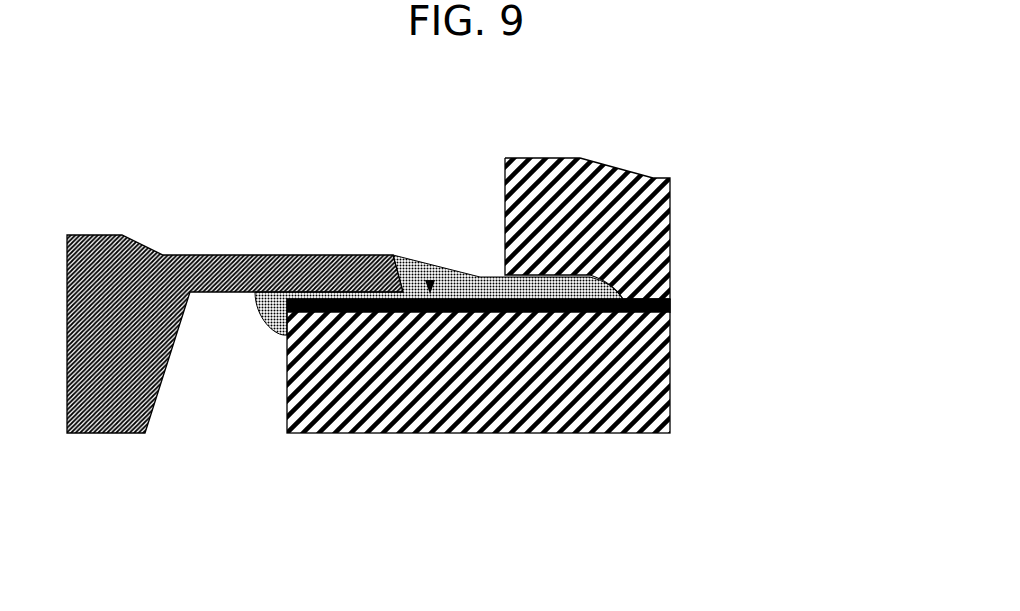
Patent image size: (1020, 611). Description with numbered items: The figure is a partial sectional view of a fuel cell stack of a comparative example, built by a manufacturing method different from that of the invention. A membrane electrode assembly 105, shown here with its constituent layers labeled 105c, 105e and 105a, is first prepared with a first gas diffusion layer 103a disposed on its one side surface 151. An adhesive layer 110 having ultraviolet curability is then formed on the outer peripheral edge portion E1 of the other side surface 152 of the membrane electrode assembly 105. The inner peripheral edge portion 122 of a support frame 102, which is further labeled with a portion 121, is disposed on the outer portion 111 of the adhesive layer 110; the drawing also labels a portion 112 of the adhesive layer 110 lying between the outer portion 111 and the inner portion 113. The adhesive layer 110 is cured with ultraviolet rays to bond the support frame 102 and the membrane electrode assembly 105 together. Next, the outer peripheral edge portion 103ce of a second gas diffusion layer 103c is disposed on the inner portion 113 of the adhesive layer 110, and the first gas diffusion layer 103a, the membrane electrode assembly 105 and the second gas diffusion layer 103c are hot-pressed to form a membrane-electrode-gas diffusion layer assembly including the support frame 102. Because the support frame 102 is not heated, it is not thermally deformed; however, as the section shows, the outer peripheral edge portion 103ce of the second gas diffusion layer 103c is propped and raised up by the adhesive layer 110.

The support frame 102 is at (235, 266).
The base portion 121 is at (153, 250).
The inner peripheral edge portion 122 is at (240, 254).
The outer peripheral edge portion 103ce is at (530, 172).
The first gas diffusion layer 103a is at (627, 337).
The second gas diffusion layer 103c is at (655, 213).
The membrane electrode assembly 105 is at (774, 218).
The end face upper part 105c is at (673, 301).
The end face edge 105e is at (673, 307).
The end face lower part 105a is at (673, 316).
The adhesive layer 110 is at (478, 426).
The outer portion 111 is at (353, 313).
The second substrate layer 112 is at (440, 313).
The inner portion 113 is at (532, 313).
The one side surface 151 is at (548, 313).
The other side surface 152 is at (473, 277).
The outer peripheral edge portion E1 is at (428, 282).